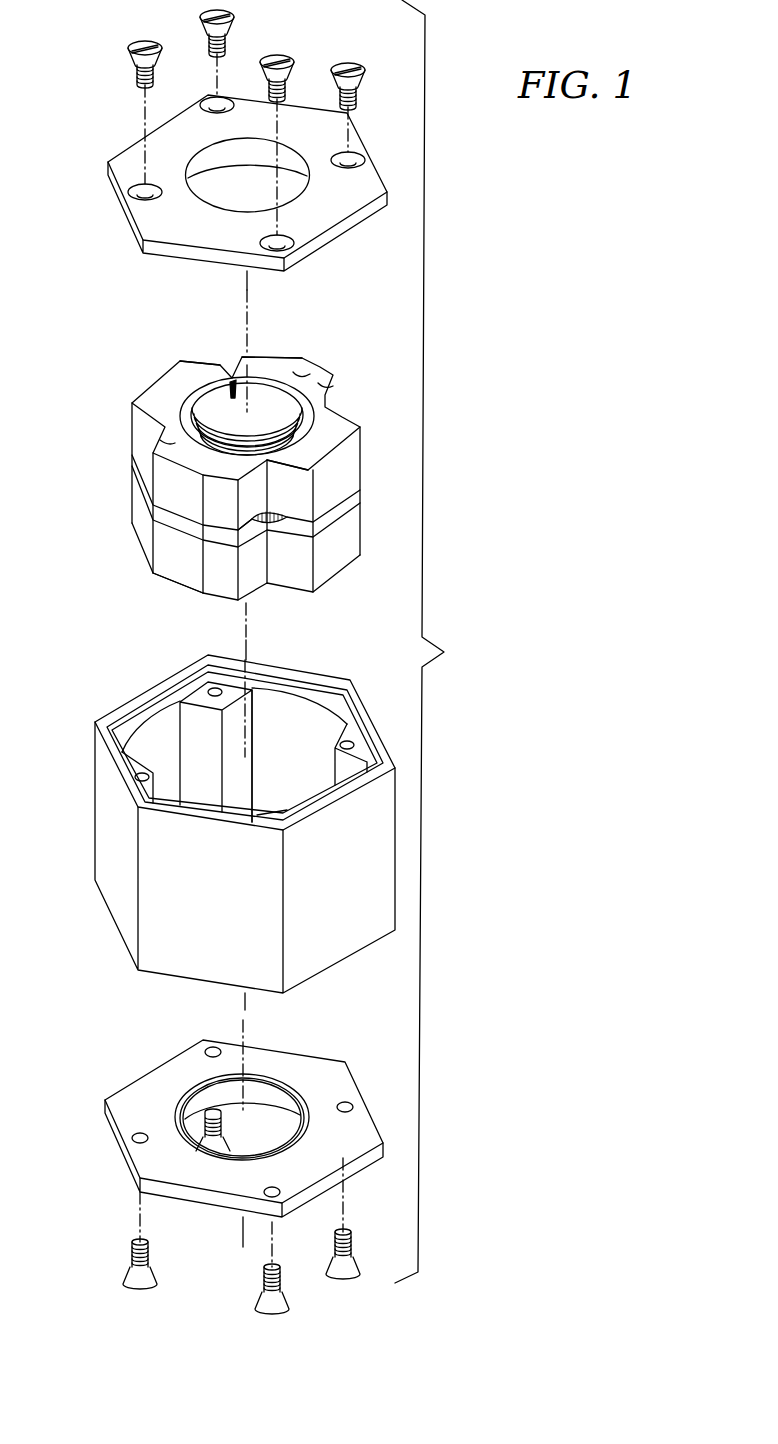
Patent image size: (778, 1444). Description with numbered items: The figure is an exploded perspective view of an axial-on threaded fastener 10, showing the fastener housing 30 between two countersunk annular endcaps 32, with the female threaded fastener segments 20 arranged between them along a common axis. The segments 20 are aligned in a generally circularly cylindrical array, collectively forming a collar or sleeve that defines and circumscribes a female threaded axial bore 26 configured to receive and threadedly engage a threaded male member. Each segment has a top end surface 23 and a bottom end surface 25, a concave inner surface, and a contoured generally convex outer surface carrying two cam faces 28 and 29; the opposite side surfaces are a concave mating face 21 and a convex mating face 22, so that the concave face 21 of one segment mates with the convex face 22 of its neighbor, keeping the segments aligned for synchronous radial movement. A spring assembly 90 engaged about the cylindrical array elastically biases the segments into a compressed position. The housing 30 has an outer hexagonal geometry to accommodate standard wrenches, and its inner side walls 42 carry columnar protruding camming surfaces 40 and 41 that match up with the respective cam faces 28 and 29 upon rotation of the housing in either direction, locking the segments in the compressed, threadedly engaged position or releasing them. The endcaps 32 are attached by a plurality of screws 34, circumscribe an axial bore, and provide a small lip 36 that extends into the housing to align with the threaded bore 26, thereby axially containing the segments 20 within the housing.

The threaded fastener 10 is at (441, 641).
The female threaded fastener segments 20 is at (221, 459).
The concave mating face 21 is at (293, 370).
The convex mating face 22 is at (319, 383).
The top end surface 23 is at (170, 442).
The bottom end surface 25 is at (163, 593).
The female threaded axial bore 26 is at (232, 386).
The cam face 28 is at (203, 360).
The cam face 29 is at (236, 352).
The fastener housing 30 is at (198, 824).
The countersunk annular endcaps 32 is at (130, 155).
The screws 34 is at (140, 58).
The lip 36 is at (187, 1092).
The camming surface 40 is at (200, 725).
The camming surface 41 is at (240, 775).
The inner side walls 42 is at (312, 766).
The spring assembly 90 is at (283, 530).